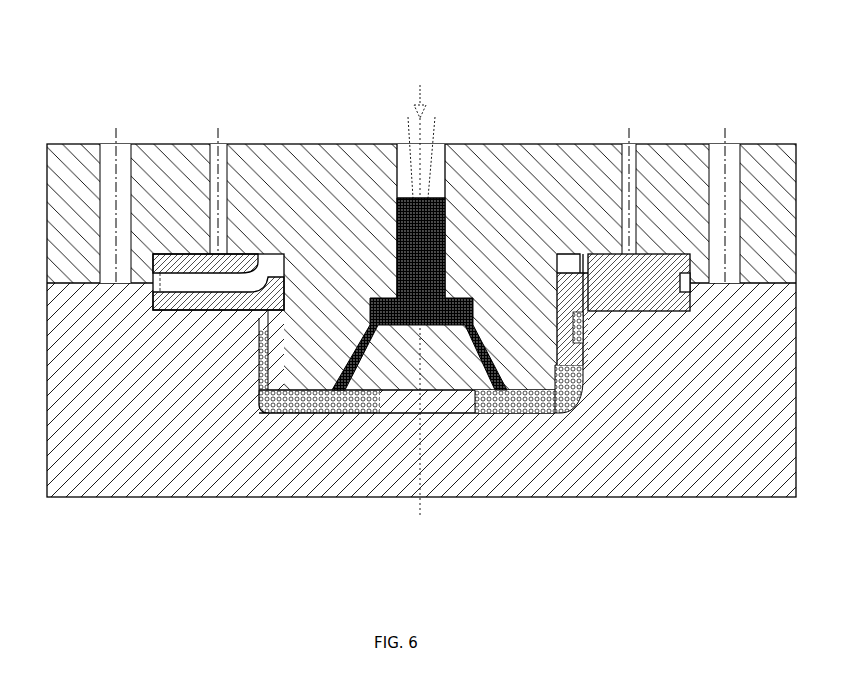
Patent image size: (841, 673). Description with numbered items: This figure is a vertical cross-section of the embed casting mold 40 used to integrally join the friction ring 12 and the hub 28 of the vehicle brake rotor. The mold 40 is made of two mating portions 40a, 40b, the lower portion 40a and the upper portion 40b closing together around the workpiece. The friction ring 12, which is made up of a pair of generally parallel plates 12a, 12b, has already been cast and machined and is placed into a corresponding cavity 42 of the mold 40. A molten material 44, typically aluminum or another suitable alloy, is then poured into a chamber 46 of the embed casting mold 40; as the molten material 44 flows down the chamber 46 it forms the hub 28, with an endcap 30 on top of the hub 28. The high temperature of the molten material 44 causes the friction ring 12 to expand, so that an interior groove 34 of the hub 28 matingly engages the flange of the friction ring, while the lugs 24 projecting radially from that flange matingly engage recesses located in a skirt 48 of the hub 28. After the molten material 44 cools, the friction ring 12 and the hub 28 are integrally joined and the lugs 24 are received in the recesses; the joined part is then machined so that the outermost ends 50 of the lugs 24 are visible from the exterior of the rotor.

The friction ring 12 is at (361, 321).
The plate 12a is at (170, 312).
The plate 12b is at (173, 252).
The lugs 24 is at (573, 343).
The hub 28 is at (340, 392).
The endcap 30 is at (490, 410).
The interior groove 34 is at (260, 378).
The mold 40 is at (330, 106).
The mating portion 40a is at (733, 478).
The mating portion 40b is at (757, 217).
The cavity 42 is at (433, 155).
The molten material 44 is at (438, 208).
The chamber 46 is at (405, 208).
The skirt 48 is at (578, 375).
The outermost ends 50 is at (580, 383).